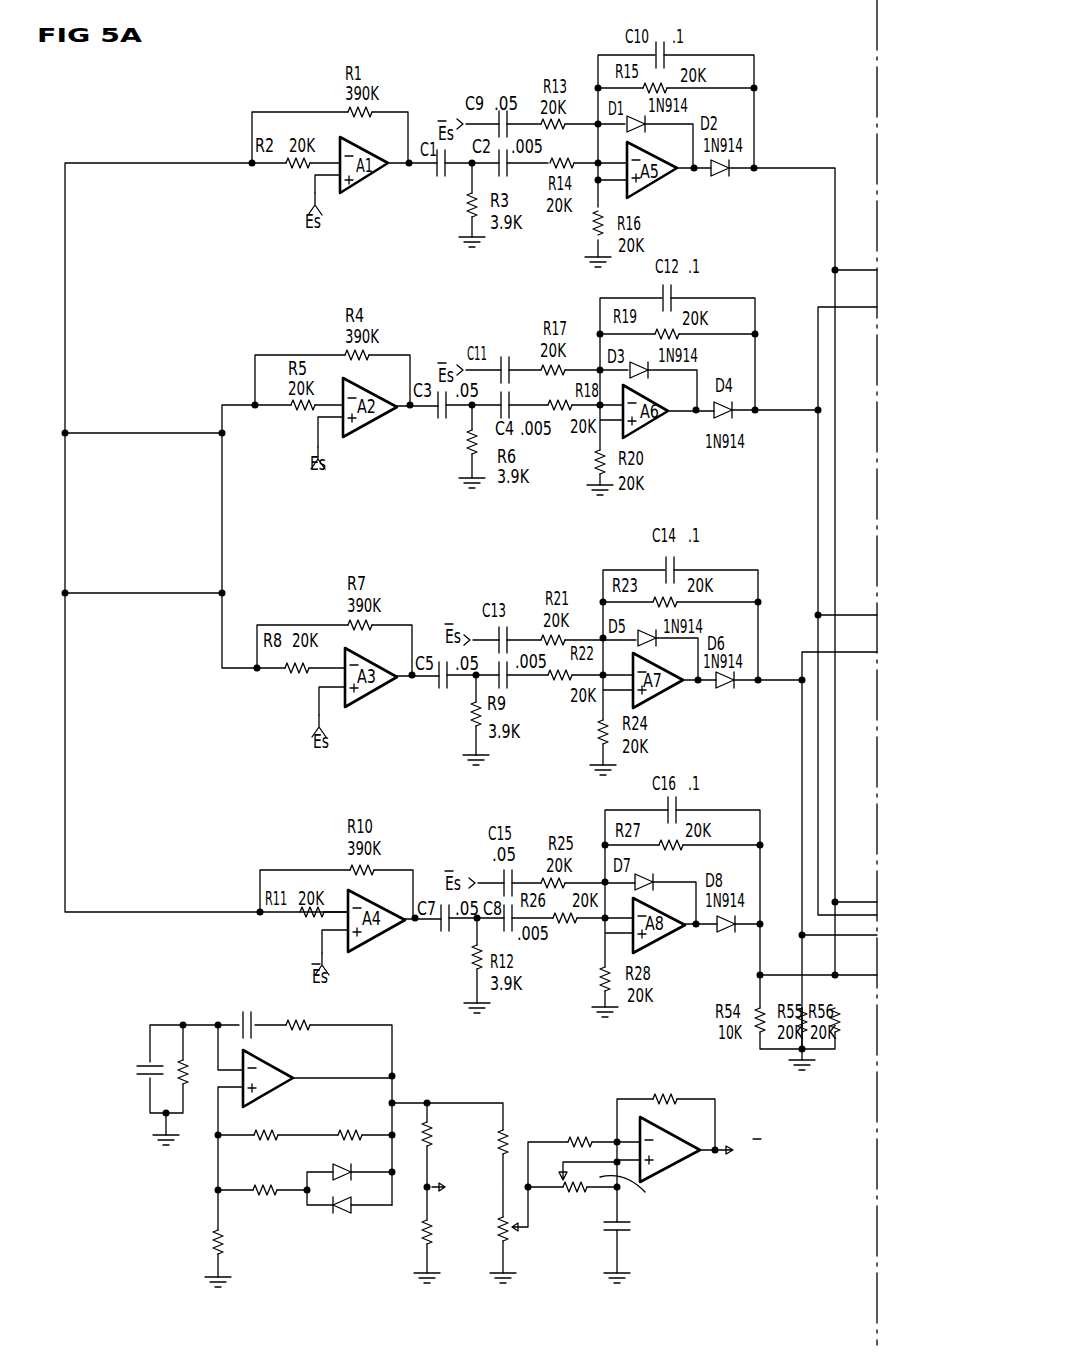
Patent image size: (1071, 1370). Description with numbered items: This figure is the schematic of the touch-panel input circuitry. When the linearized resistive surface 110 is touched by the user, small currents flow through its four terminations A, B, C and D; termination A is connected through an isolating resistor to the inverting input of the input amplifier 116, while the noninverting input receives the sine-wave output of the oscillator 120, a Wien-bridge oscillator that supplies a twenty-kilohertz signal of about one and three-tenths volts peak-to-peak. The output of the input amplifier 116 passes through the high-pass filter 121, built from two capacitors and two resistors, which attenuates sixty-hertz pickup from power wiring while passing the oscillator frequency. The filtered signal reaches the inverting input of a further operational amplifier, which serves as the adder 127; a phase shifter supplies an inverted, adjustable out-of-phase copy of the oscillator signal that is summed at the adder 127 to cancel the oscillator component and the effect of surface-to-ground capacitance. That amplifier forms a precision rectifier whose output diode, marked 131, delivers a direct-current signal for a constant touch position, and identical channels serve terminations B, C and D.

The linearized resistive surface 110 is at (212, 507).
The input amplifier 116 is at (376, 192).
The oscillator 120 is at (270, 1267).
The high-pass filter 121 is at (531, 198).
The adder 127 is at (668, 183).
The diode D2 131 is at (727, 178).